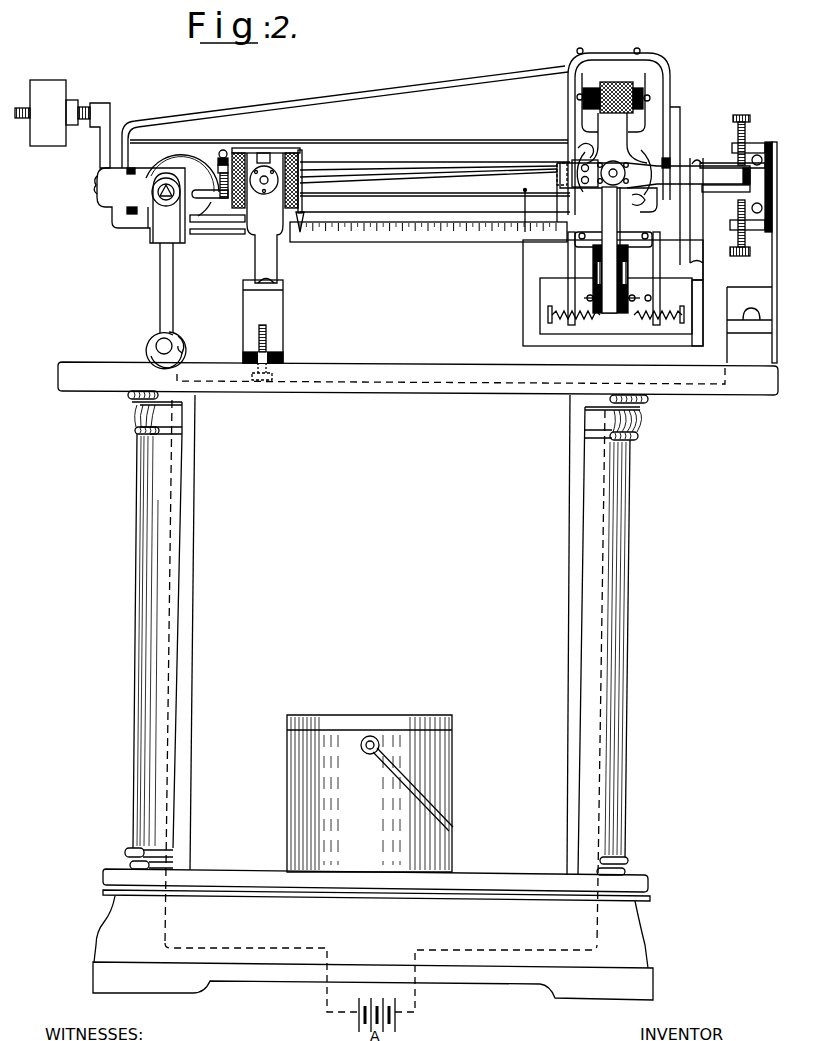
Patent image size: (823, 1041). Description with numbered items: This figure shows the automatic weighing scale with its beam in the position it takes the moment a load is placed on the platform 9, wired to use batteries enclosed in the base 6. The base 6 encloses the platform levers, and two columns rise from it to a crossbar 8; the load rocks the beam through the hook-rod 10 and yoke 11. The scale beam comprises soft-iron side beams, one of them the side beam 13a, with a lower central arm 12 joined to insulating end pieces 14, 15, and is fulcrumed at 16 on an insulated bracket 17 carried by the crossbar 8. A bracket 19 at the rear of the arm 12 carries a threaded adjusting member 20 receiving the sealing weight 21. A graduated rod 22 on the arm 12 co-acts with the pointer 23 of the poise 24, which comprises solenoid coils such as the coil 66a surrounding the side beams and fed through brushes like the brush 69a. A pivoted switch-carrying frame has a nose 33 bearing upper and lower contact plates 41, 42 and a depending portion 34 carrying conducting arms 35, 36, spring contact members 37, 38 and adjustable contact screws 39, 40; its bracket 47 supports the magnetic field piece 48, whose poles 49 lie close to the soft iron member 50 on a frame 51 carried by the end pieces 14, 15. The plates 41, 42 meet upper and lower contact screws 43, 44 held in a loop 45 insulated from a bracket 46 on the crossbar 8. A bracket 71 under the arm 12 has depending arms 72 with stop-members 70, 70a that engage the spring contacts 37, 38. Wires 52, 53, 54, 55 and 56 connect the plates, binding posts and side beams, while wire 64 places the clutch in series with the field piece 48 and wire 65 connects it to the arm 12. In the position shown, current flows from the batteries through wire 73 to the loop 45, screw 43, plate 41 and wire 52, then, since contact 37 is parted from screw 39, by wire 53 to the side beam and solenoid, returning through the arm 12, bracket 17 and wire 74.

The base 6 is at (638, 942).
The crossbar 8 is at (456, 386).
The platform 9 is at (500, 880).
The hook-rod 10 is at (146, 347).
The yoke 11 is at (158, 290).
The lower central arm 12 is at (230, 233).
The side beam 13a is at (368, 190).
The end piece 14 is at (134, 165).
The end piece 15 is at (672, 160).
The fulcrum 16 is at (270, 175).
The bracket 17 is at (283, 302).
The bracket 19 is at (117, 198).
The threaded adjusting member 20 is at (84, 103).
The sealing weight 21 is at (47, 81).
The graduated rod 22 is at (408, 245).
The pointer 23 is at (303, 216).
The poise 24 is at (303, 162).
The nose 33 is at (680, 185).
The depending portion 34 is at (610, 261).
The conducting arm 35 is at (588, 277).
The conducting arm 36 is at (636, 277).
The spring contact member 37 is at (586, 315).
The spring contact member 38 is at (635, 315).
The contact screw 39 is at (616, 306).
The contact screw 40 is at (651, 300).
The upper contact plate 41 is at (710, 165).
The lower contact plate 42 is at (712, 193).
The upper contact screw 43 is at (748, 128).
The lower contact screw 44 is at (739, 237).
The loop 45 is at (770, 185).
The bracket 46 is at (777, 290).
The bracket 47 is at (624, 140).
The magnetic field piece 48 is at (636, 88).
The poles 49 is at (594, 83).
The soft iron member 50 is at (614, 66).
The frame 51 is at (372, 86).
The wire 52 is at (703, 245).
The wire 53 is at (560, 258).
The wire 54 is at (705, 250).
The wire 55 is at (704, 318).
The wire 56 is at (640, 243).
The wire 64 is at (583, 120).
The wire 65 is at (650, 212).
The solenoid coil 66a is at (243, 150).
The metallic brush 69a is at (185, 186).
The stop-member 70 is at (560, 322).
The stop-member 70a is at (662, 322).
The bracket 71 is at (568, 270).
The depending arms 72 is at (660, 290).
The wire 73 is at (496, 953).
The wire 74 is at (170, 562).